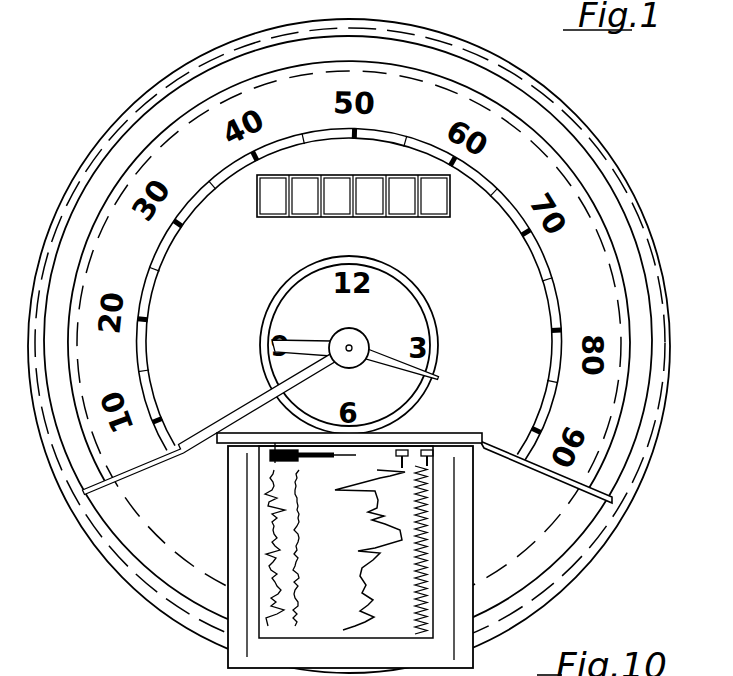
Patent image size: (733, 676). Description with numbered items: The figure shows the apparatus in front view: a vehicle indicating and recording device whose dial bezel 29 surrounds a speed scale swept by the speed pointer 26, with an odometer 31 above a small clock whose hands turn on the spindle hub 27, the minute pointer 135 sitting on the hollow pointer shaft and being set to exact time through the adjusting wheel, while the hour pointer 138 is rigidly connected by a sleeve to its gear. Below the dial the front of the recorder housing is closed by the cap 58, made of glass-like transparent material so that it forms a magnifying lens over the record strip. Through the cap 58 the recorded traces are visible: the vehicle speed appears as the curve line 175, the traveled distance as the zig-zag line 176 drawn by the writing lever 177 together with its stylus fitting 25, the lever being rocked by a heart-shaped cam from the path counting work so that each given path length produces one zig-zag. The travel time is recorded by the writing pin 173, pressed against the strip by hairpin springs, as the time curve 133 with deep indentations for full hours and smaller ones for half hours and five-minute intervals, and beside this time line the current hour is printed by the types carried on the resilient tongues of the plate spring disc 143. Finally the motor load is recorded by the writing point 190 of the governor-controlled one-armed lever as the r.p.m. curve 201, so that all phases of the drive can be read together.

The dial bezel 29 is at (588, 277).
The odometer 31 is at (376, 207).
The clock spindle hub 27 is at (350, 347).
The hour pointer 138 is at (298, 337).
The minute pointer 135 is at (438, 378).
The writing pin 173 is at (290, 440).
The speed pointer 26 is at (222, 423).
The stylus fitting 25 is at (403, 449).
The writing lever 177 is at (440, 452).
The writing point 190 is at (273, 460).
The plate spring disc 143 is at (298, 463).
The cap 58 is at (230, 538).
The r.p.m. curve 201 is at (270, 563).
The time curve 133 is at (290, 615).
The zig-zag line 176 is at (422, 542).
The curve line 175 is at (382, 608).